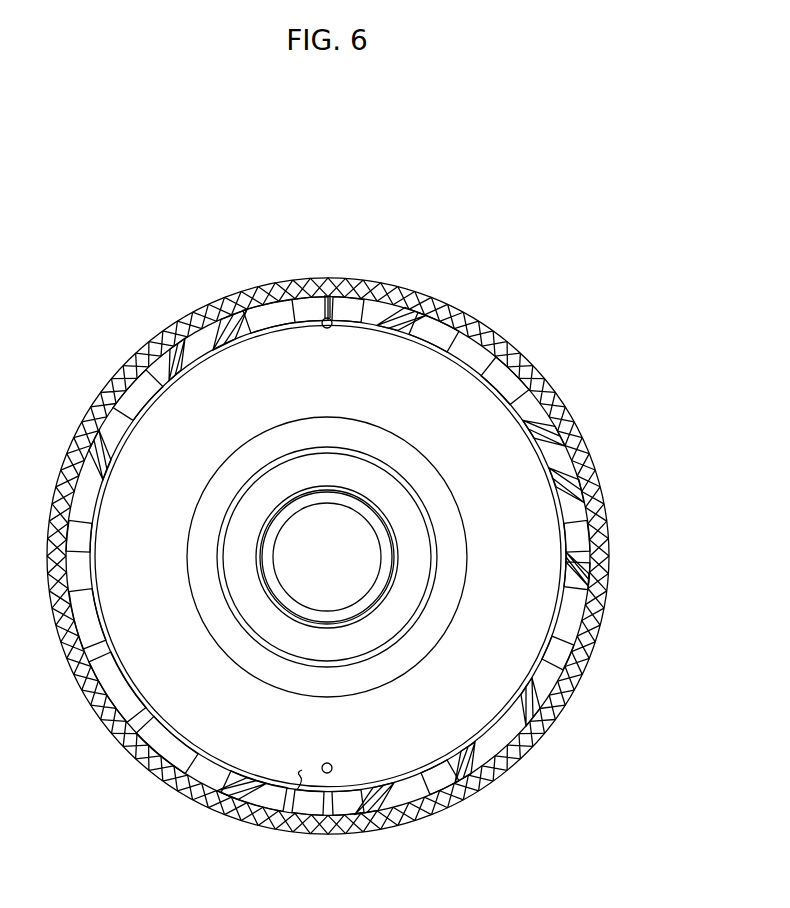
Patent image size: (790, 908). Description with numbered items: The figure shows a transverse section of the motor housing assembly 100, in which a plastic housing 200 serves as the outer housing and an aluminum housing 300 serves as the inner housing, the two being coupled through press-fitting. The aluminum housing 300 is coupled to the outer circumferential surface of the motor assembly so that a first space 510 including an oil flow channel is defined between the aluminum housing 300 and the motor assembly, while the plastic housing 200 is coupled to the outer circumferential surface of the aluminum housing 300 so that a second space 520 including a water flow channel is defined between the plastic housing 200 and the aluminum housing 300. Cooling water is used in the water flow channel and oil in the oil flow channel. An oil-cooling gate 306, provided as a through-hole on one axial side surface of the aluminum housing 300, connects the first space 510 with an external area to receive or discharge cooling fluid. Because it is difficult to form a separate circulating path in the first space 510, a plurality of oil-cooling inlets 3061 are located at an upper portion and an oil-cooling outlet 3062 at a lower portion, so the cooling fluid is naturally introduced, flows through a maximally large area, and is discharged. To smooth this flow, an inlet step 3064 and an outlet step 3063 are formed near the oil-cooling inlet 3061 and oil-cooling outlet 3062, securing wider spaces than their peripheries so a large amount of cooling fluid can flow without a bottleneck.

The motor housing assembly 100 is at (62, 197).
The plastic housing 200 is at (606, 537).
The aluminum housing 300 is at (517, 492).
The oil-cooling gate 306 is at (303, 213).
The oil-cooling inlet 3061 is at (325, 293).
The oil-cooling outlet 3062 is at (327, 762).
The outlet step 3063 is at (303, 833).
The inlet step 3064 is at (160, 368).
The first space 510 is at (557, 690).
The second space 520 is at (597, 627).